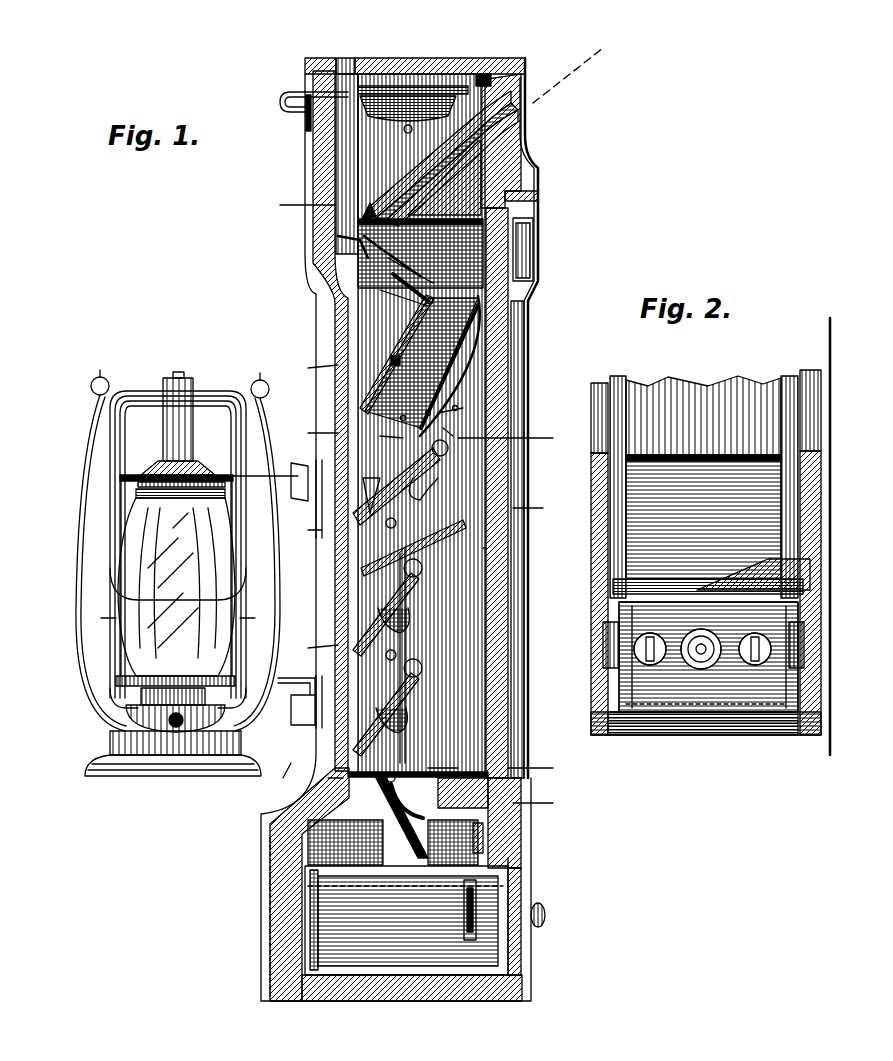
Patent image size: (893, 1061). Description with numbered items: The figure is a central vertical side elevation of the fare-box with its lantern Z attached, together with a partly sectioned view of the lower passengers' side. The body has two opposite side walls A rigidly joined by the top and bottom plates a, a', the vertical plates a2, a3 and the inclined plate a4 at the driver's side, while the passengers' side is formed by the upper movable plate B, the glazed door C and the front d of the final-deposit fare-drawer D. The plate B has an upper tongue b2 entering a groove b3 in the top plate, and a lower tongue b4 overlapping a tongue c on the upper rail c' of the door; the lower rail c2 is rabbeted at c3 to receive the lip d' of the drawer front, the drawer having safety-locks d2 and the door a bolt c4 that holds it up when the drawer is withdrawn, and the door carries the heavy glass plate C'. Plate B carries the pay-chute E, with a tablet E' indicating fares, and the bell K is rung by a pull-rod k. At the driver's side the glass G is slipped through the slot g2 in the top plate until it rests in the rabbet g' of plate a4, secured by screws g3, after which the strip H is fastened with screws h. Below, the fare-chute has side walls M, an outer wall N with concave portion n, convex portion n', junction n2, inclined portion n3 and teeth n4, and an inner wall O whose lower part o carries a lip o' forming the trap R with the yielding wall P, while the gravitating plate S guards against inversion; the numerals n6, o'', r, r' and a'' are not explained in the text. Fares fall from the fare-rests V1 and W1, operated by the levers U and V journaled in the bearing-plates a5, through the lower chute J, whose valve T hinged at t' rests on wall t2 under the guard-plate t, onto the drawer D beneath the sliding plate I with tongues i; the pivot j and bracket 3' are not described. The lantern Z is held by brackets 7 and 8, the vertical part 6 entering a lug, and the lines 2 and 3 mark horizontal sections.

In FIG. 1, the side wall A is at (262, 960).
In FIG. 2, the side wall A is at (592, 372).
In FIG. 1, the top plate a is at (415, 56).
In FIG. 1, the bottom plate a' is at (412, 1006).
In FIG. 2, the bottom plate a' is at (703, 738).
In FIG. 1, the vertical plate a2 is at (305, 160).
In FIG. 2, the vertical plate a2 is at (595, 634).
In FIG. 1, the vertical plate a3 is at (262, 895).
In FIG. 1, the inclined plate a4 is at (290, 795).
In FIG. 1, the bearing-plate a5 is at (400, 626).
In FIG. 2, the drawer bottom a'' is at (706, 694).
In FIG. 1, the upper movable plate B is at (518, 140).
In FIG. 1, the tongue b2 is at (474, 66).
In FIG. 1, the groove b3 is at (508, 55).
In FIG. 1, the tongue b4 is at (527, 190).
In FIG. 1, the door C is at (534, 508).
In FIG. 2, the door C is at (703, 517).
In FIG. 1, the glass plate C' is at (473, 551).
In FIG. 2, the glass plate C' is at (704, 487).
In FIG. 1, the tongue c is at (458, 459).
In FIG. 1, the upper rail c' is at (543, 248).
In FIG. 1, the lower rail c2 is at (542, 802).
In FIG. 1, the rabbet c3 is at (469, 838).
In FIG. 2, the rabbet c3 is at (708, 573).
In FIG. 2, the bolt c4 is at (753, 565).
In FIG. 1, the fare-drawer D is at (406, 920).
In FIG. 2, the fare-drawer D is at (708, 657).
In FIG. 1, the drawer front d is at (547, 932).
In FIG. 2, the drawer front d is at (702, 661).
In FIG. 1, the lip d' is at (541, 856).
In FIG. 1, the safety-lock d2 is at (483, 910).
In FIG. 1, the pay-chute E is at (462, 158).
In FIG. 1, the tablet E' is at (542, 512).
In FIG. 1, the glass G is at (314, 512).
In FIG. 1, the rabbet g' is at (320, 766).
In FIG. 1, the slot g2 is at (360, 62).
In FIG. 1, the screw g3 is at (330, 230).
In FIG. 1, the plate H is at (343, 50).
In FIG. 1, the screw h is at (300, 115).
In FIG. 1, the plate I is at (443, 761).
In FIG. 1, the end tongue i is at (463, 801).
In FIG. 1, the lower safety-chute J is at (407, 809).
In FIG. 1, the pivot j is at (397, 765).
In FIG. 1, the bell K is at (425, 90).
In FIG. 1, the pull-rod k is at (283, 88).
In FIG. 1, the side wall of fare-chute M is at (420, 253).
In FIG. 1, the outer wall N is at (402, 288).
In FIG. 1, the concave portion n is at (392, 256).
In FIG. 1, the convexed portion n' is at (410, 273).
In FIG. 1, the point of junction n2 is at (404, 305).
In FIG. 1, the lower inclined portion n3 is at (383, 350).
In FIG. 1, the teeth n4 is at (440, 299).
In FIG. 1, the stop n6 is at (369, 203).
In FIG. 1, the inner wall O is at (450, 366).
In FIG. 1, the lower inclined part o is at (423, 405).
In FIG. 1, the lip o' is at (398, 410).
In FIG. 1, the pin o'' is at (387, 428).
In FIG. 1, the yielding wall P is at (421, 363).
In FIG. 1, the trap R is at (451, 408).
In FIG. 1, the pin r is at (465, 396).
In FIG. 1, the pin r' is at (449, 433).
In FIG. 1, the gravitating plate S is at (419, 361).
In FIG. 1, the plate-valve T is at (405, 883).
In FIG. 1, the guard-plate t is at (390, 818).
In FIG. 1, the hinge t' is at (345, 842).
In FIG. 1, the chute wall t2 is at (448, 842).
In FIG. 1, the lever U is at (400, 482).
In FIG. 1, the lever V is at (408, 482).
In FIG. 1, the fare-rest V1 is at (387, 609).
In FIG. 1, the fare-rest W1 is at (387, 707).
In FIG. 1, the lantern Z is at (72, 536).
In FIG. 1, the section line 2 is at (428, 435).
In FIG. 1, the section line 3 is at (422, 671).
In FIG. 1, the bracket 3' is at (277, 588).
In FIG. 1, the vertical part 6 is at (307, 530).
In FIG. 1, the angular bracket 7 is at (299, 206).
In FIG. 1, the lower angular bracket 8 is at (296, 691).